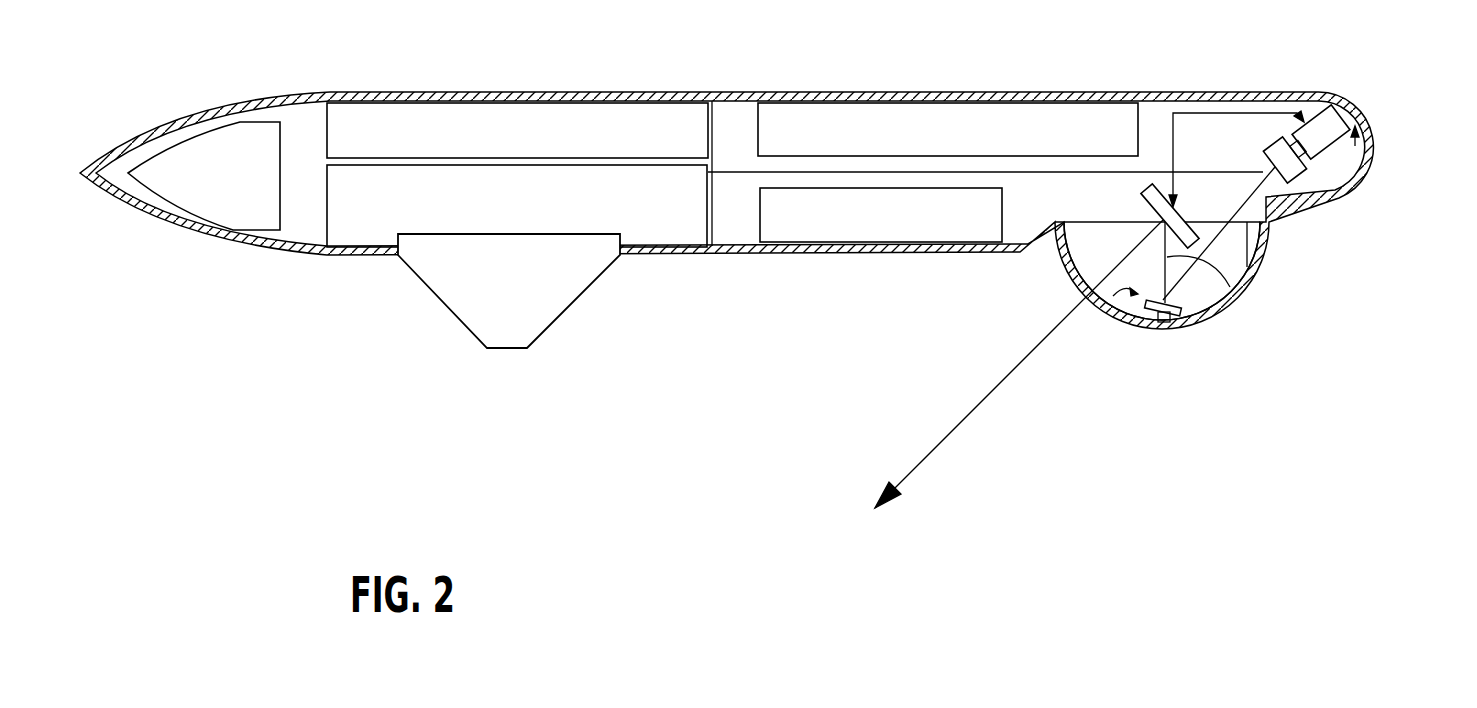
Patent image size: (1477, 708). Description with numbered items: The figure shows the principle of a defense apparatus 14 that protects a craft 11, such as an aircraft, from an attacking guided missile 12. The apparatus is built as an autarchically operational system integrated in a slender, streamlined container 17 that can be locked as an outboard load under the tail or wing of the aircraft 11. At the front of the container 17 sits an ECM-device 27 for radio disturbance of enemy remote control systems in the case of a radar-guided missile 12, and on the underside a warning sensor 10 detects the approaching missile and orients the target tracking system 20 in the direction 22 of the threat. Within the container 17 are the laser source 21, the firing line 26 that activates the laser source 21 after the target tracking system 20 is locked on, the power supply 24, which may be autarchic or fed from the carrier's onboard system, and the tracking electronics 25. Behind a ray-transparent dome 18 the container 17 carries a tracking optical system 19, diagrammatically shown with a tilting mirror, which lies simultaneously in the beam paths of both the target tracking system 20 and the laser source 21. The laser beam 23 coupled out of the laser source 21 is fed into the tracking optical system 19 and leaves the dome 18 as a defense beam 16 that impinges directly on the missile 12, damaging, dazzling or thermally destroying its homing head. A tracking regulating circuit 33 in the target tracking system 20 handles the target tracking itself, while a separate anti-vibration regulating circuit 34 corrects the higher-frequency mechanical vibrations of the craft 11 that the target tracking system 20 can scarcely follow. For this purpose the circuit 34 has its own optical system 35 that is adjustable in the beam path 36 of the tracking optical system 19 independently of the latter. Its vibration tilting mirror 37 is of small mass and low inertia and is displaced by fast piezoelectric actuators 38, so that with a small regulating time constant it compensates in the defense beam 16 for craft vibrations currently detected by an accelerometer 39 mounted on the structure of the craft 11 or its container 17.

The warning sensor 10 is at (472, 300).
The craft 11 is at (837, 53).
The guided missile 12 is at (858, 593).
The defense apparatus 14 is at (1292, 55).
The defense beam 16 is at (965, 427).
The container 17 is at (305, 125).
The ray-transparent dome 18 is at (1216, 321).
The tracking optical system 19 is at (1130, 267).
The target tracking system 20 is at (1322, 148).
The laser source 21 is at (407, 213).
The direction 22 is at (858, 552).
The laser beam 23 is at (738, 175).
The power supply 24 is at (938, 220).
The tracking electronics 25 is at (973, 107).
The firing line 26 is at (573, 127).
The ECM-device 27 is at (177, 157).
The tracking regulating circuit 33 is at (1222, 114).
The anti-vibration regulating circuit 34 is at (1272, 238).
The optical system 35 is at (1103, 302).
The beam path 36 is at (1245, 294).
The vibration tilting mirror 37 is at (1147, 325).
The piezoelectric actuators 38 is at (1163, 327).
The accelerometer 39 is at (1348, 103).